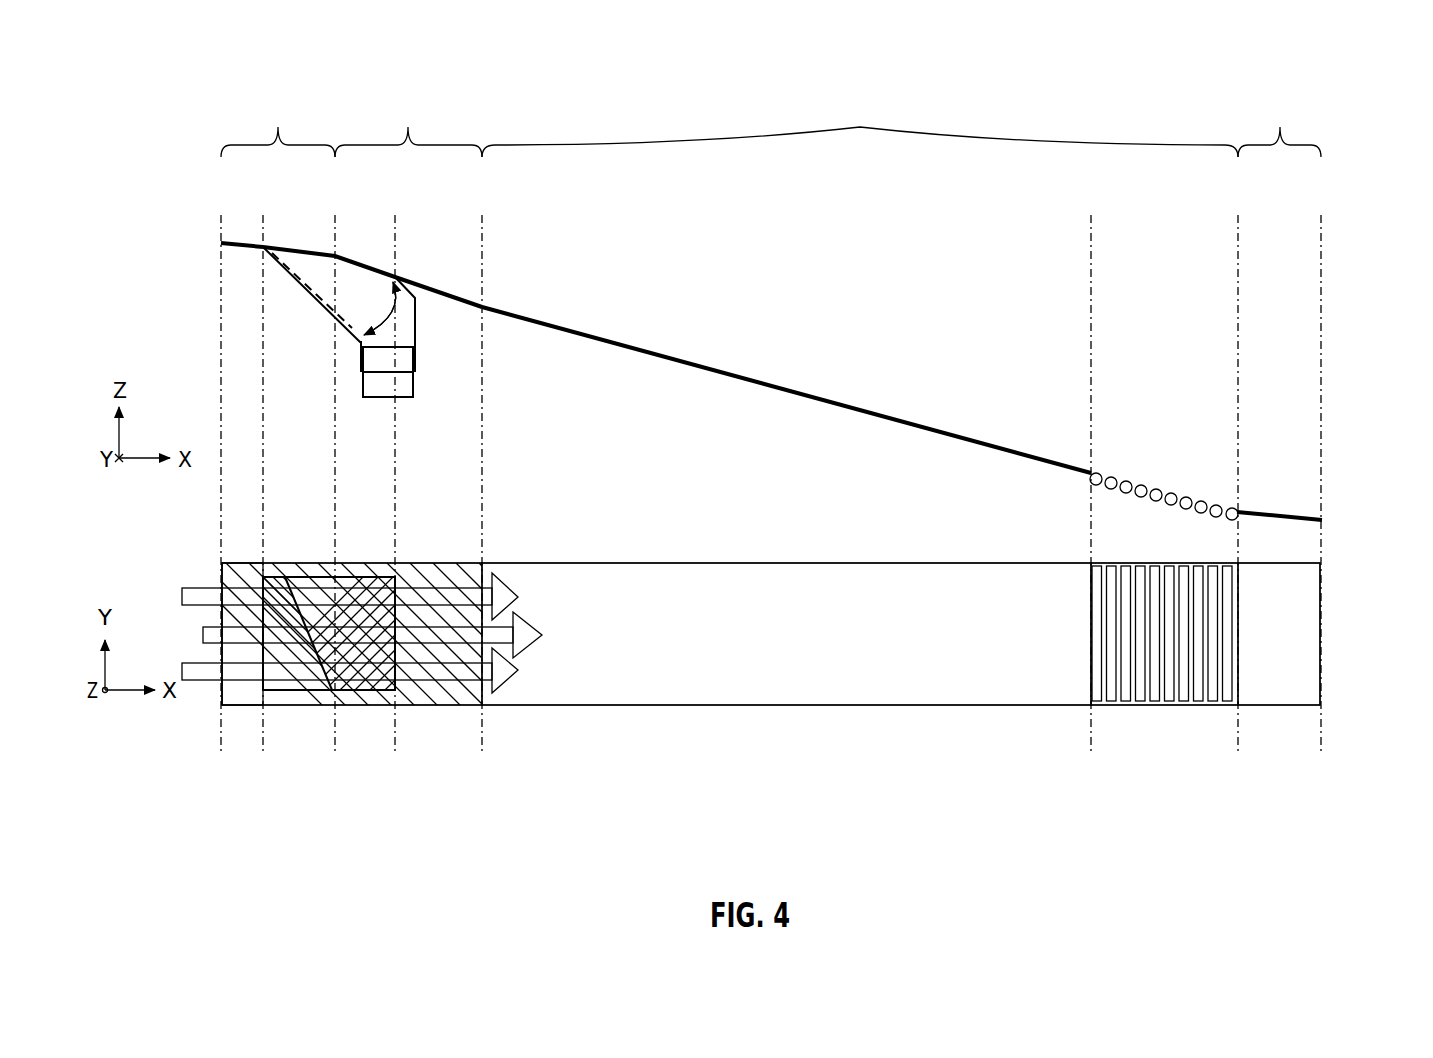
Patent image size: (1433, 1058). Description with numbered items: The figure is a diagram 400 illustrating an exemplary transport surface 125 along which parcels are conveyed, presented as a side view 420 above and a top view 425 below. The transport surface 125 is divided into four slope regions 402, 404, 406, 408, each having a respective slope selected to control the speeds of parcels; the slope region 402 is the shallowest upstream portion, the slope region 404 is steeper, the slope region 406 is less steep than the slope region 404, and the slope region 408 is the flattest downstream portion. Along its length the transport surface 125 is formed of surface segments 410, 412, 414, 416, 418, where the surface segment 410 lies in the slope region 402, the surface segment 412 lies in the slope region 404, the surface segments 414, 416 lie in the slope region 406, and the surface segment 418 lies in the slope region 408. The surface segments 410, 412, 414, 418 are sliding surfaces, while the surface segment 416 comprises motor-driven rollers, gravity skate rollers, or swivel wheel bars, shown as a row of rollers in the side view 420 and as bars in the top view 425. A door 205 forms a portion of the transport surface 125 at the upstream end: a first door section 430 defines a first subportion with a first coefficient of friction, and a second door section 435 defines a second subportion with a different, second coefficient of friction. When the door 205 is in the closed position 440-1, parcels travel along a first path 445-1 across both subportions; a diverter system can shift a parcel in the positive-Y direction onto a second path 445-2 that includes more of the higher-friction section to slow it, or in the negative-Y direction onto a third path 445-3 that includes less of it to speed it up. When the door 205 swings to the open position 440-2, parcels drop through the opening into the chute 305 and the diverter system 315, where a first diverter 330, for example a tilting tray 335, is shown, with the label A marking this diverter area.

The diagram 400 is at (1339, 98).
The slope region 402 is at (278, 126).
The slope region 404 is at (408, 126).
The slope region 406 is at (860, 126).
The slope region 408 is at (1279, 126).
The surface segment 410 is at (248, 243).
The surface segment 412 is at (462, 299).
The surface segment 414 is at (787, 387).
The surface segment 416 is at (1157, 453).
The surface segment 418 is at (1260, 510).
The side view 420 is at (1330, 306).
The top view 425 is at (1334, 620).
The transport surface 125 is at (779, 268).
The door 205 is at (380, 308).
The chute 305 is at (276, 312).
The diverter system 315 is at (308, 388).
The first diverter 330 is at (413, 387).
The tilting tray 335 is at (415, 412).
The first door section 430 is at (330, 250).
The second door section 435 is at (348, 252).
The closed position 440-1 is at (375, 268).
The open position 440-2 is at (293, 262).
The first path 445-1 is at (532, 620).
The second path 445-2 is at (514, 584).
The third path 445-3 is at (522, 669).
The detail A is at (413, 372).